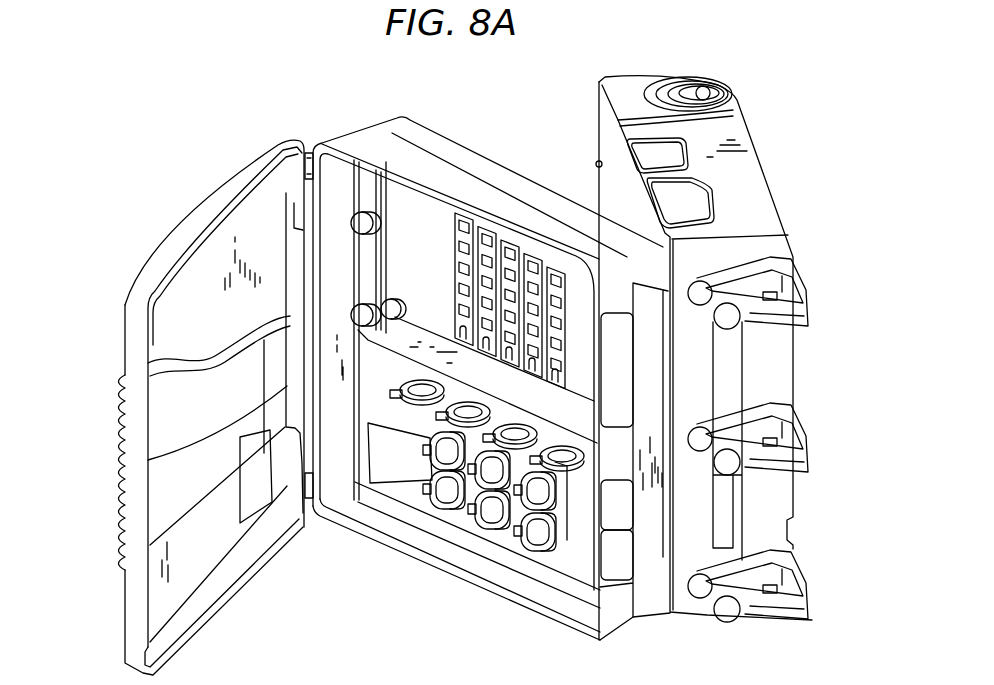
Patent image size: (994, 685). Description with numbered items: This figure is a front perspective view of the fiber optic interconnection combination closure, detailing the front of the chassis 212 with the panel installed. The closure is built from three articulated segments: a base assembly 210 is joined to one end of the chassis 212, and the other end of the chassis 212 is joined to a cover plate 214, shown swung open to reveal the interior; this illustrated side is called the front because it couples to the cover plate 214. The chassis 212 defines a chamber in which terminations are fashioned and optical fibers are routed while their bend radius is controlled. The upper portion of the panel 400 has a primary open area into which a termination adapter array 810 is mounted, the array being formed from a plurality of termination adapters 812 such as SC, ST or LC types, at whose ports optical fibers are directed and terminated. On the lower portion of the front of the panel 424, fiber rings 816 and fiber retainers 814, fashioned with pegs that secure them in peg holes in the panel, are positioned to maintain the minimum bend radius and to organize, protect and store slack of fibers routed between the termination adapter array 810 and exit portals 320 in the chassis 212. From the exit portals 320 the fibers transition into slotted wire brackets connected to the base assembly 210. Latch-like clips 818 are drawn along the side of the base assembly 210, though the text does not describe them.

The base assembly 210 is at (752, 135).
The chassis 212 is at (390, 118).
The cover plate 214 is at (127, 297).
The exit portals 320 is at (603, 567).
The upper portion of the panel 400 is at (405, 257).
The lower portion of the front of the panel 424 is at (585, 538).
The termination adapter array 810 is at (540, 247).
The termination adapters 812 is at (467, 214).
The fiber retainers 814 is at (515, 510).
The fiber rings 816 is at (450, 505).
The latch clips 818 is at (813, 279).